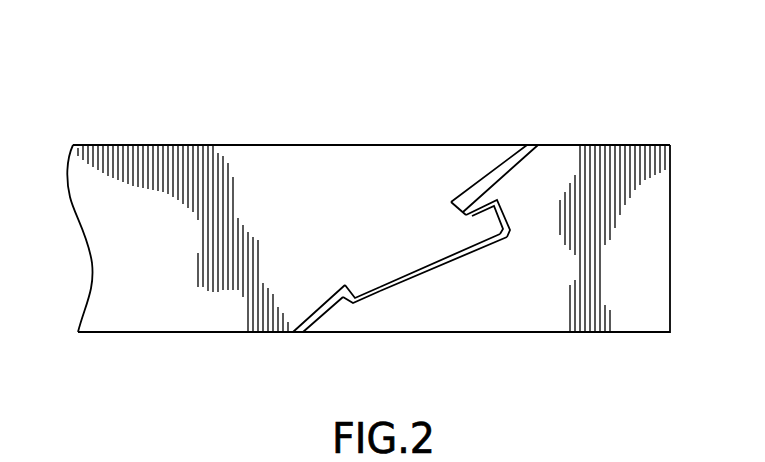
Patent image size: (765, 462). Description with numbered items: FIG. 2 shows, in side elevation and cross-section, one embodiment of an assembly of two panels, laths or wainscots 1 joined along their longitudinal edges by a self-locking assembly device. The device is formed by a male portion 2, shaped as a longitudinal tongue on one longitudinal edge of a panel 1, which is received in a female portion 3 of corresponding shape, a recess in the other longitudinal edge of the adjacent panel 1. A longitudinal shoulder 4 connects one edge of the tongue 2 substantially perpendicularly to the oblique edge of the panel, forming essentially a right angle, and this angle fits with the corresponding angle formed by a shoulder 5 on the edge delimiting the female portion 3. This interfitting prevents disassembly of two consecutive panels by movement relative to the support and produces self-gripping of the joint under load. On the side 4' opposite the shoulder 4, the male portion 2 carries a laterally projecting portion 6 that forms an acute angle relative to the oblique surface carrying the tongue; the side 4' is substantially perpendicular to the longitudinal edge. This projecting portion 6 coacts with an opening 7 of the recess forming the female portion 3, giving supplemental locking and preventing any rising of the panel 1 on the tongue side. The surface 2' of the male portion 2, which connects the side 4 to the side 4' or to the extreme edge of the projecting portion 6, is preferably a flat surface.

The panels, laths or wainscots 1 is at (562, 165).
The male portion 2 is at (368, 275).
The surface of the male portion 2' is at (374, 275).
The female portion 3 is at (480, 253).
The longitudinal shoulder 4 is at (355, 245).
The side opposite the shoulder 4' is at (429, 218).
The shoulder 5 is at (340, 300).
The laterally projecting portion 6 is at (487, 223).
The opening 7 is at (512, 220).